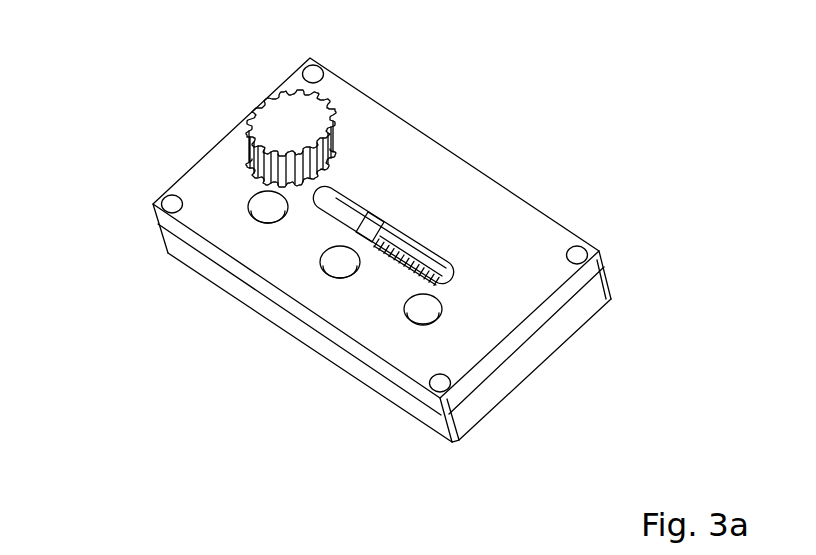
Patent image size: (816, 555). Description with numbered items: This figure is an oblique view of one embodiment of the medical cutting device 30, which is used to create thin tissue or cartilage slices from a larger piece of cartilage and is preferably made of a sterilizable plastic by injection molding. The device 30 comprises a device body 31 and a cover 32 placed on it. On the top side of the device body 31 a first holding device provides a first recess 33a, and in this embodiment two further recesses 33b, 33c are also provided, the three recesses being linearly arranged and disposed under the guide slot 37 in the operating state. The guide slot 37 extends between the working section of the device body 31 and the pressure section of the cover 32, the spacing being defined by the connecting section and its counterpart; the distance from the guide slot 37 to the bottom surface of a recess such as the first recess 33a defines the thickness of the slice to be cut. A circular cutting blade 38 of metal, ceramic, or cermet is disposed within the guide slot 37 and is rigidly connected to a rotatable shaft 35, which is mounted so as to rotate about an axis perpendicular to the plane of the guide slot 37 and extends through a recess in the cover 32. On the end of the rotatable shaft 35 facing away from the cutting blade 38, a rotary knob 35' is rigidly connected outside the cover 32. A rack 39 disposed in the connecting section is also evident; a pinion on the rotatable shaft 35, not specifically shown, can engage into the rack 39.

The medical cutting device 30 is at (119, 66).
The device body 31 is at (335, 362).
The cover 32 is at (414, 400).
The first recess 33a is at (423, 318).
The further recess 33b is at (337, 262).
The further recess 33c is at (251, 212).
The rotatable shaft 35 is at (395, 143).
The rotary knob 35' is at (313, 105).
The guide slot 37 is at (256, 350).
The cutting blade 38 is at (362, 203).
The rack 39 is at (413, 260).